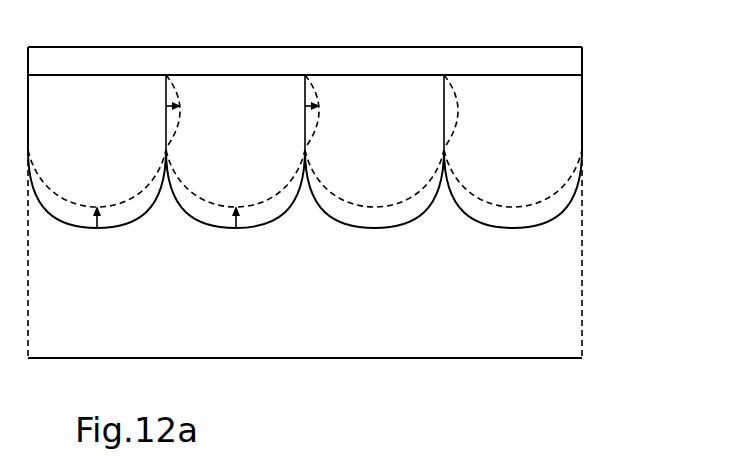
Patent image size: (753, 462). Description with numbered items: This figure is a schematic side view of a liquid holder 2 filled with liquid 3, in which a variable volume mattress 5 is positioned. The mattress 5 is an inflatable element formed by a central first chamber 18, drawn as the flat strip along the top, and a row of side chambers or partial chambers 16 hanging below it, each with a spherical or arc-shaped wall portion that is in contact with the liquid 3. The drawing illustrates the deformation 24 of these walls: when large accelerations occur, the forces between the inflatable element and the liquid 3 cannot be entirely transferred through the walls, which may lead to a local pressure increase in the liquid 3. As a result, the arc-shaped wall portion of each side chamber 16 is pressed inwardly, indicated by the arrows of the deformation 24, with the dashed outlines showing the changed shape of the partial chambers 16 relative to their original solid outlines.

The liquid holder 2 is at (365, 47).
The liquid 3 is at (305, 254).
The variable volume mattress 5 is at (583, 75).
The side chamber 16 is at (524, 135).
The central chamber 18 is at (521, 63).
The deformation 24 is at (158, 97).